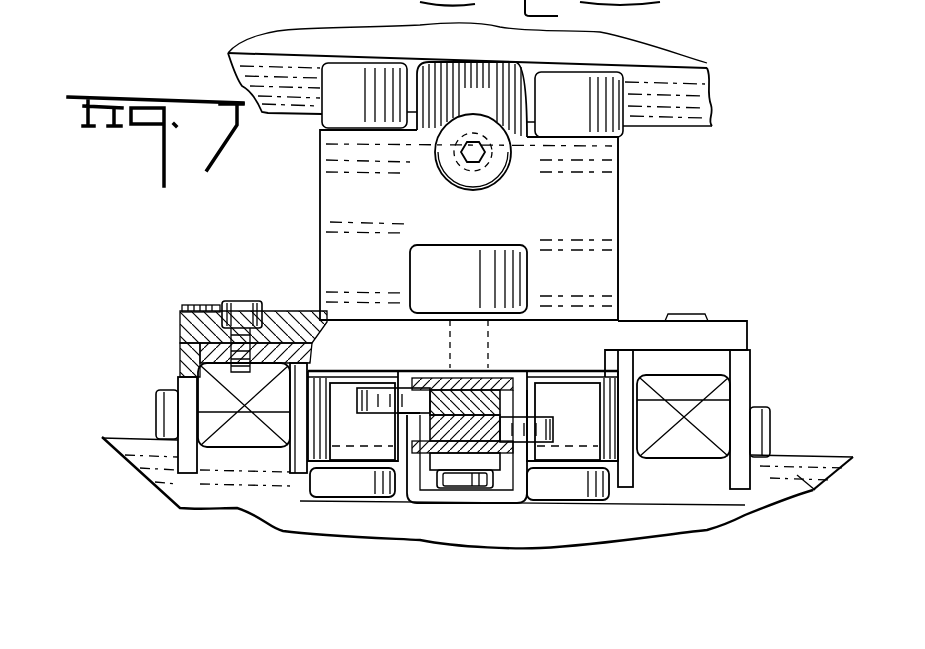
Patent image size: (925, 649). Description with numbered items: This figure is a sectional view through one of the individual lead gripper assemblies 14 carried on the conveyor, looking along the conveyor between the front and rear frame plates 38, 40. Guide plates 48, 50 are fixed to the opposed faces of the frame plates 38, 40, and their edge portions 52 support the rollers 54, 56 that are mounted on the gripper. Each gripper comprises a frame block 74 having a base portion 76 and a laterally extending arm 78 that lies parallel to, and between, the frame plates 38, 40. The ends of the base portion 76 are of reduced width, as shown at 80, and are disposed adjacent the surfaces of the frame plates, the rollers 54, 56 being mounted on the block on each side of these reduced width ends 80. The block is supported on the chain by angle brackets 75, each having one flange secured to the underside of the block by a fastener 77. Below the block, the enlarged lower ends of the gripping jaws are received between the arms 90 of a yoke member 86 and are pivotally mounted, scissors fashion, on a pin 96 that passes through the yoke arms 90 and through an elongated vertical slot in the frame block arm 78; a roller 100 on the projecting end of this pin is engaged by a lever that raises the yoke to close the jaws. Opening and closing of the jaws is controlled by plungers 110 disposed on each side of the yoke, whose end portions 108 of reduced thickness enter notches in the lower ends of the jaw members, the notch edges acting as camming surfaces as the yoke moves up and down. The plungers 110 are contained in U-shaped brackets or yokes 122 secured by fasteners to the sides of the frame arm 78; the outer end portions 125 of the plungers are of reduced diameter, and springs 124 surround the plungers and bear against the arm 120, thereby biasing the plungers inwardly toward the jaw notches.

The lead gripper assembly 14 is at (720, 222).
The front frame plate 38 is at (660, 530).
The rear frame plate 40 is at (617, 43).
The guide plate 48 is at (830, 458).
The guide plate 50 is at (683, 0).
The edge portion 52 is at (683, 92).
The roller 54 is at (340, 480).
The roller 56 is at (340, 80).
The frame block 74 is at (622, 256).
The angle bracket 75 is at (503, 14).
The base portion 76 is at (518, 219).
The fastener 77 is at (446, 172).
The arm 78 is at (557, 345).
The reduced width end 80 is at (472, 99).
The yoke member 86 is at (508, 403).
The yoke arm 90 is at (432, 382).
The pin 96 is at (470, 490).
The roller 100 is at (527, 280).
The end portion 108 is at (397, 378).
The plunger 110 is at (583, 390).
The arm 120 is at (186, 465).
The U-shaped bracket 122 is at (190, 338).
The spring 124 is at (263, 430).
The outer end portion 125 is at (165, 408).